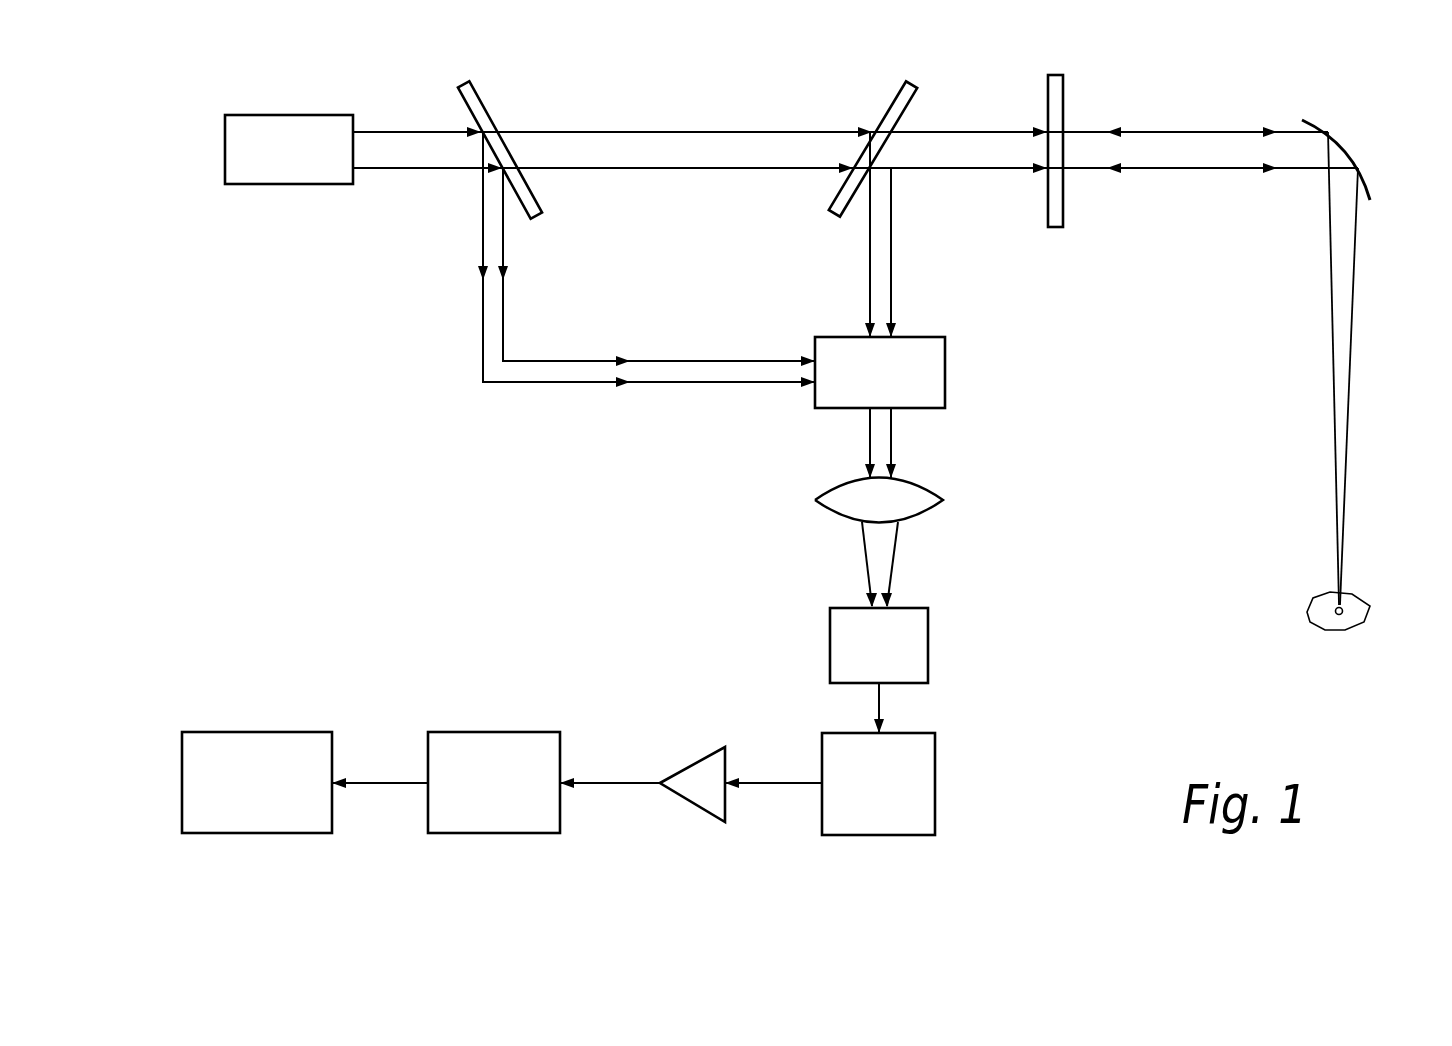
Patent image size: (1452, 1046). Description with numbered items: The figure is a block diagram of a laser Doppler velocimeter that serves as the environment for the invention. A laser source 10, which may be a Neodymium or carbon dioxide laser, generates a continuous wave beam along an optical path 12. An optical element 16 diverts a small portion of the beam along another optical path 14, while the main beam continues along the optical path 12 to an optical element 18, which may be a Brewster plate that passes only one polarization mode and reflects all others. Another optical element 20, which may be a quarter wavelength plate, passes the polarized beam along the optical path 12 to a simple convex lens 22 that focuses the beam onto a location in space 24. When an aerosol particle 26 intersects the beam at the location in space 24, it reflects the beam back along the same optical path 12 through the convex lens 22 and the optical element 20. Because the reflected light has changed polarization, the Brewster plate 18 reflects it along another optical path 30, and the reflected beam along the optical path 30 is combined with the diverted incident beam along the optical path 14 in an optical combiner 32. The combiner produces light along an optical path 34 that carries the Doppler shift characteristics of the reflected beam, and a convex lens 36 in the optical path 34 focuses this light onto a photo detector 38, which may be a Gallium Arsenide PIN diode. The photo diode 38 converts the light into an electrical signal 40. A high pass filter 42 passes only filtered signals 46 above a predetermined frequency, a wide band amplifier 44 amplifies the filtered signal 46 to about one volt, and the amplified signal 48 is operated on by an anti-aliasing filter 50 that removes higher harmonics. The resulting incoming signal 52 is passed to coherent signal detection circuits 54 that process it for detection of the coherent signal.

The laser source 10 is at (289, 121).
The optical path 12 is at (855, 118).
The optical path 14 is at (606, 259).
The optical element 16 is at (509, 136).
The optical element 18 is at (866, 134).
The optical element 20 is at (1093, 138).
The convex lens 22 is at (1362, 352).
The location in space 24 is at (1366, 628).
The particle 26 is at (1299, 641).
The optical path 30 is at (922, 234).
The optical combiner 32 is at (924, 372).
The optical path 34 is at (932, 443).
The convex lens 36 is at (909, 543).
The photo detector 38 is at (923, 645).
The electrical signal 40 is at (947, 708).
The high pass filter 42 is at (887, 820).
The wide band amplifier 44 is at (685, 753).
The filtered signal 46 is at (773, 835).
The amplified signal 48 is at (610, 823).
The anti-aliasing filter 50 is at (494, 762).
The incoming signal 52 is at (380, 828).
The coherent signal detection circuits 54 is at (257, 758).